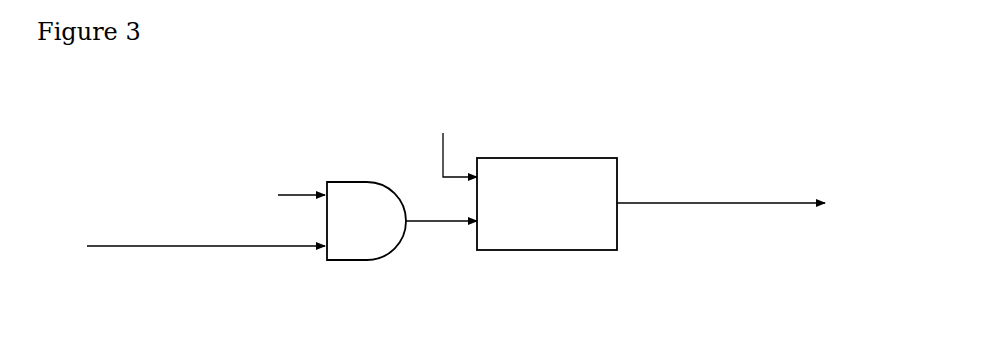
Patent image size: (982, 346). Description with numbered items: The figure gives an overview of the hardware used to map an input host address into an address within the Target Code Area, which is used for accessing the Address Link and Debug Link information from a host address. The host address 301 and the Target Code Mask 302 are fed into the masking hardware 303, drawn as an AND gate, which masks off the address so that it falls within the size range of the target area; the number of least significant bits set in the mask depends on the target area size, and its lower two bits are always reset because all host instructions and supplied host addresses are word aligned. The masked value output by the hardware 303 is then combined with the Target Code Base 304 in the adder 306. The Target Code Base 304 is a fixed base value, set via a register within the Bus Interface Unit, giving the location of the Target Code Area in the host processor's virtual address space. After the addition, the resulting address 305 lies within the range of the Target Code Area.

The host address 301 is at (186, 246).
The Target Code Mask 302 is at (276, 196).
The hardware 303 is at (365, 262).
The Target Code Base 304 is at (450, 144).
The address 305 is at (742, 205).
The adder 306 is at (582, 155).